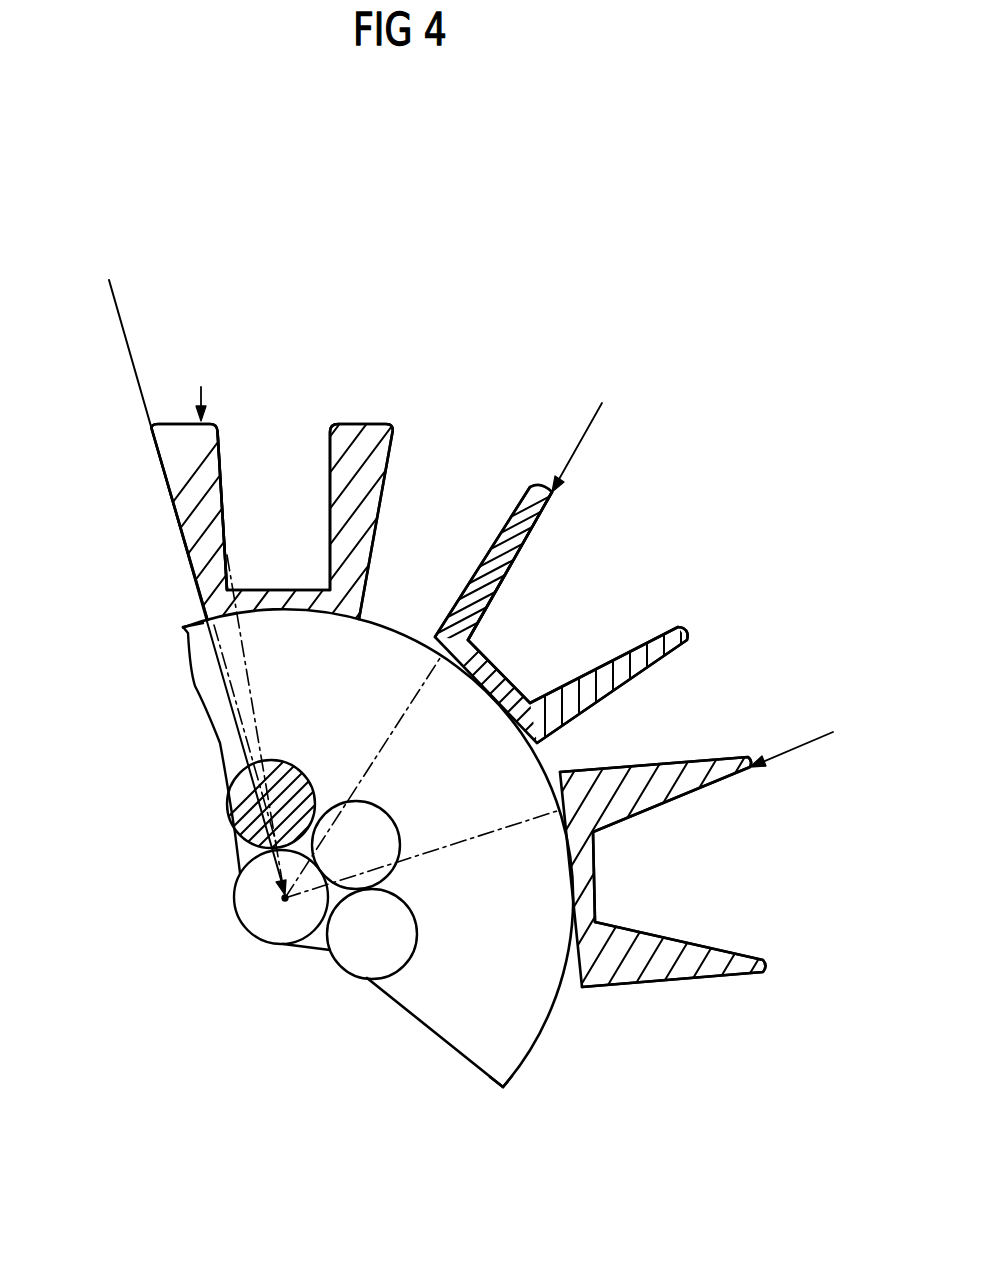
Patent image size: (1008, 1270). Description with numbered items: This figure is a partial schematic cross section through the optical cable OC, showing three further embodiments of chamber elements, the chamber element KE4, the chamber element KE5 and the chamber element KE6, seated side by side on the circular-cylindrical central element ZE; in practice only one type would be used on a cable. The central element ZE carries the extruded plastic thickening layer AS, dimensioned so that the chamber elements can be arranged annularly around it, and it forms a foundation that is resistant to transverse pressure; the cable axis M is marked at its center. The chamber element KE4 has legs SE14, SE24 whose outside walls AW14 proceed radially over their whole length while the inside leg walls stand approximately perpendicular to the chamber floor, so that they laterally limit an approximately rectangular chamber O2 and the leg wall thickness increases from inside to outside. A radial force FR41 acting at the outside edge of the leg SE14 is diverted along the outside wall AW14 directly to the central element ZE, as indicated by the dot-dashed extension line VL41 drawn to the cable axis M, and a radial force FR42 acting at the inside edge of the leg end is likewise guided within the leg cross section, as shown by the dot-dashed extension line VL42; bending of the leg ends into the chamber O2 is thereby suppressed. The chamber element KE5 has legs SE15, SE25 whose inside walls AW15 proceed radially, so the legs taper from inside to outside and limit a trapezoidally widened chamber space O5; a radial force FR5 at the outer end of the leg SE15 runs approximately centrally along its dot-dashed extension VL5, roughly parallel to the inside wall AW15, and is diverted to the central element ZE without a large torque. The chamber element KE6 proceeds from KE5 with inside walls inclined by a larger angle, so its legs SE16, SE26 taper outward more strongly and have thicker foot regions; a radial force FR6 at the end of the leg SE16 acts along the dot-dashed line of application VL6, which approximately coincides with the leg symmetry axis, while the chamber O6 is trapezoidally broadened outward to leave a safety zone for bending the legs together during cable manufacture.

The optical cable OC is at (160, 1030).
The cable axis M is at (287, 932).
The thickening layer AS is at (459, 1037).
The central element ZE is at (532, 1073).
The chamber element KE4 is at (308, 382).
The leg SE14 is at (196, 447).
The leg SE24 is at (378, 425).
The outside wall of the leg AW14 is at (218, 467).
The chamber O2 is at (298, 465).
The radial force FR41 is at (119, 310).
The radial force FR42 is at (201, 387).
The extension line VL41 is at (197, 733).
The extension line VL42 is at (250, 667).
The extension VL5 is at (415, 733).
The line of application VL6 is at (507, 826).
The chamber element KE5 is at (657, 537).
The leg SE15 is at (531, 490).
The leg SE25 is at (687, 627).
The inside wall of the leg AW15 is at (485, 573).
The radial force FR5 is at (582, 447).
The chamber space O5 is at (602, 610).
The chamber element KE6 is at (730, 992).
The leg SE16 is at (668, 806).
The leg SE26 is at (677, 962).
The radial force FR6 is at (770, 745).
The chamber O6 is at (703, 908).